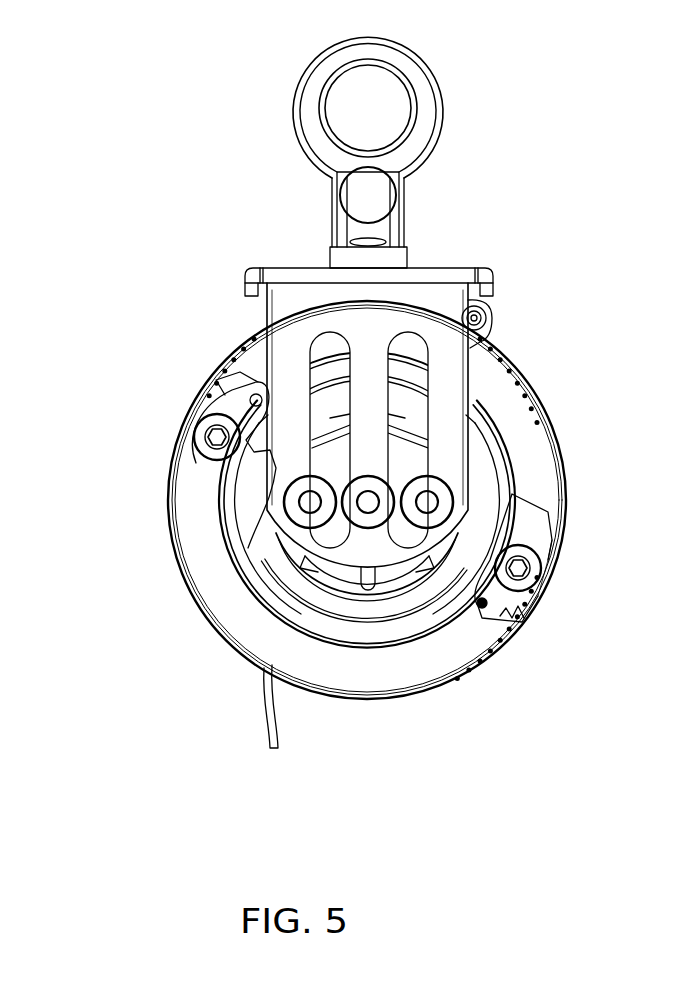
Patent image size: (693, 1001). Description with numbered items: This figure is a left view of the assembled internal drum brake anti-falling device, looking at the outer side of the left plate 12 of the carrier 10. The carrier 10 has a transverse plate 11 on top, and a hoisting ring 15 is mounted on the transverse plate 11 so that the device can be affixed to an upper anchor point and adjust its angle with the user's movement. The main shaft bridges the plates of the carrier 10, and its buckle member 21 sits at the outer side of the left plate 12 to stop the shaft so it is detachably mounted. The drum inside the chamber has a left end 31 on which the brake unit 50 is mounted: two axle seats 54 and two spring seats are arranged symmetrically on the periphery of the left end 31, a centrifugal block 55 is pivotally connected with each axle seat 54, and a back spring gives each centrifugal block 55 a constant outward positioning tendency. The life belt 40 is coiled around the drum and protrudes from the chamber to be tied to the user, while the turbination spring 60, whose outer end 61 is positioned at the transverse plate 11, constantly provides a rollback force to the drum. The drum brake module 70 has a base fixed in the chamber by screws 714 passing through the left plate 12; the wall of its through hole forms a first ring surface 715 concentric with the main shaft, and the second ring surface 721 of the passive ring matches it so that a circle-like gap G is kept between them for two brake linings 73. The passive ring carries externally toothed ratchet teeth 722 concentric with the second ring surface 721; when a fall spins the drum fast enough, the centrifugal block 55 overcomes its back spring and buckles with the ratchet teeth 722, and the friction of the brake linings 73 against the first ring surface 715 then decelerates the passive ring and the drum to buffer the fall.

The carrier 10 is at (494, 252).
The transverse plate 11 is at (440, 267).
The left plate 12 is at (452, 360).
The hoisting ring 15 is at (325, 78).
The buckle member 21 is at (368, 488).
The left end 31 is at (200, 543).
The life belt 40 is at (268, 712).
The brake unit 50 is at (541, 600).
The axle seat 54 is at (534, 568).
The centrifugal block 55 is at (530, 522).
The turbination spring 60 is at (540, 395).
The outer end 61 is at (492, 310).
The drum brake module 70 is at (428, 634).
The brake lining 73 is at (462, 600).
The screw 714 is at (310, 478).
The first ring surface 715 is at (366, 598).
The second ring surface 721 is at (240, 572).
The ratchet teeth 722 is at (371, 582).
The gap G is at (363, 543).